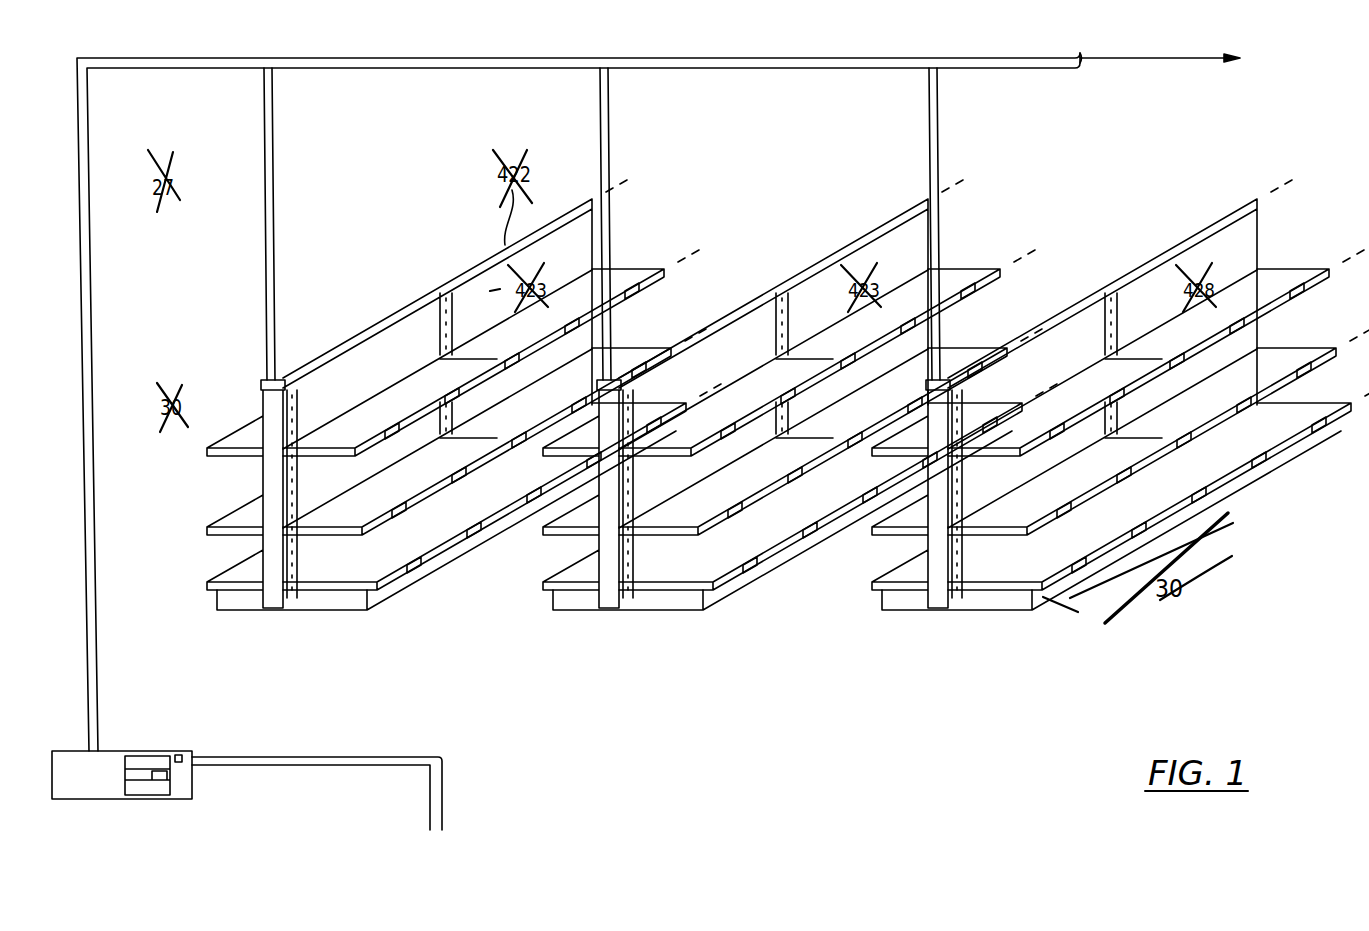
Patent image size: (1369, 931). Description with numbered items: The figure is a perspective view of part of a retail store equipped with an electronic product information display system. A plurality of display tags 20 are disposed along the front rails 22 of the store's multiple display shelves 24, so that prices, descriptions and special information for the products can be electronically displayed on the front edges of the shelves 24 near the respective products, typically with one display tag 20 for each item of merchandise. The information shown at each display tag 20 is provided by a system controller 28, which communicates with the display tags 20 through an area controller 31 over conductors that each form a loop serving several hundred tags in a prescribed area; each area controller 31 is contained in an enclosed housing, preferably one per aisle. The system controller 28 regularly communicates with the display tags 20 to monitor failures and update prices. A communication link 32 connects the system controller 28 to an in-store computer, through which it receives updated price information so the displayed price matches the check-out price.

The display tag 20 is at (1264, 478).
The front rail 22 is at (1043, 604).
The display shelf 24 is at (1188, 425).
The system controller 28 is at (193, 790).
The area controller 31 is at (290, 372).
The communication link 32 is at (318, 752).